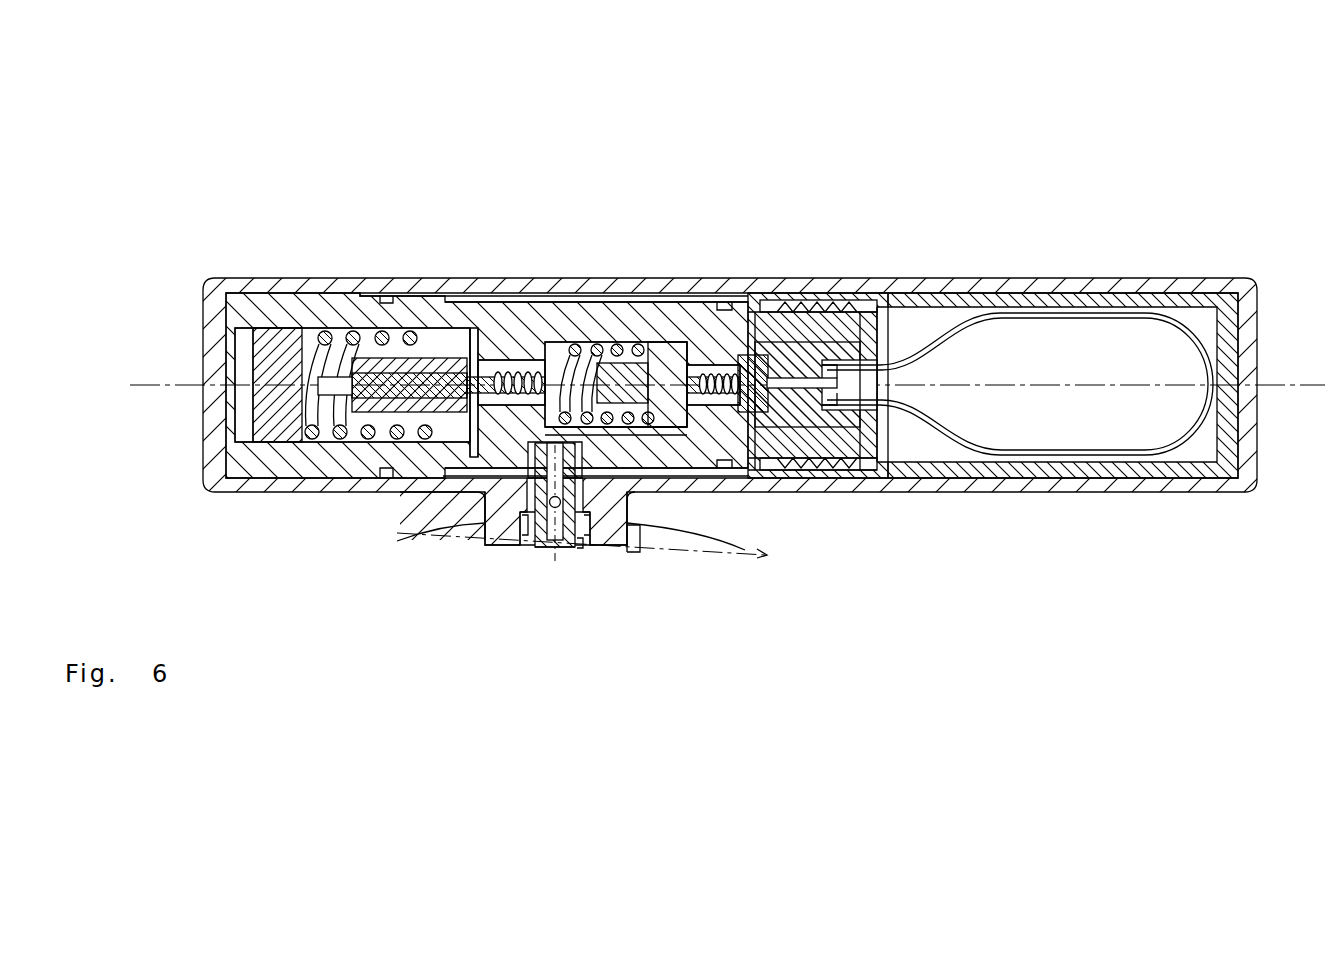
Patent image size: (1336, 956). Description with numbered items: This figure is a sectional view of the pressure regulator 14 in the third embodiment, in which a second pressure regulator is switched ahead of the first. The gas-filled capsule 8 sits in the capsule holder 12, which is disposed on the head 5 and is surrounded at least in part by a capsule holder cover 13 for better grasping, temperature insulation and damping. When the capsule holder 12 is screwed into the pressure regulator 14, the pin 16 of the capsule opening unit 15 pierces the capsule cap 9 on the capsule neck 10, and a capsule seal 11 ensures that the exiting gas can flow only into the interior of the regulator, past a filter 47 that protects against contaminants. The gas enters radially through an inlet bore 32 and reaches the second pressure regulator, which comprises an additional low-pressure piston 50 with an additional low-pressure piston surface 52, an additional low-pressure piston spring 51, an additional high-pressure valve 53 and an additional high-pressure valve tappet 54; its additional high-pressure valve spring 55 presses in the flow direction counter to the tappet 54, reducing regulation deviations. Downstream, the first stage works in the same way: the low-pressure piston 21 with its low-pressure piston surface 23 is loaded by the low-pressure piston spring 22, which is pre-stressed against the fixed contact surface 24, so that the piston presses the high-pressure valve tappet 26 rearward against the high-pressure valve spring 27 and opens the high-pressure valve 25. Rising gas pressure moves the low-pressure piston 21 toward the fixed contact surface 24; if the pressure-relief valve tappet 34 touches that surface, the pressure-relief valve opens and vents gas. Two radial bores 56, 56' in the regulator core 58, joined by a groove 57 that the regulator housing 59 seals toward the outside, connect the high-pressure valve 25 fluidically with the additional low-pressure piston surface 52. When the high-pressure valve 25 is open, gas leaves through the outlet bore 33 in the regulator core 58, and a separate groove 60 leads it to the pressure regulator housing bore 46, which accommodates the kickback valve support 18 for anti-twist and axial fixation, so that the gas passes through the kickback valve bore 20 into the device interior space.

The head 5 is at (512, 530).
The capsule 8 is at (1040, 430).
The capsule cap 9 is at (818, 440).
The capsule neck 10 is at (836, 406).
The capsule seal 11 is at (820, 355).
The capsule holder 12 is at (793, 483).
The capsule holder cover 13 is at (1250, 492).
The pressure regulator 14 is at (196, 170).
The capsule opening unit 15 is at (777, 350).
The pin 16 is at (872, 300).
The kickback valve support 18 is at (572, 540).
The kickback valve bore 20 is at (552, 530).
The low-pressure piston 21 is at (442, 345).
The low-pressure piston spring 22 is at (383, 340).
The low-pressure piston surface 23 is at (458, 355).
The fixed contact surface 24 is at (300, 432).
The high-pressure valve 25 is at (592, 352).
The high-pressure valve tappet 26 is at (528, 368).
The high-pressure valve spring 27 is at (538, 378).
The inlet bore 32 is at (795, 330).
The outlet bore 33 is at (478, 460).
The pressure-relief valve tappet 34 is at (345, 335).
The pressure regulator housing bore 46 is at (585, 548).
The filter 47 is at (743, 355).
The additional low-pressure piston 50 is at (676, 370).
The additional low-pressure piston spring 51 is at (614, 342).
The additional low-pressure piston surface 52 is at (686, 362).
The additional high-pressure valve 53 is at (728, 414).
The additional high-pressure valve tappet 54 is at (693, 428).
The additional high-pressure valve spring 55 is at (722, 405).
The radial bore 56 is at (527, 266).
The radial bore 56' is at (739, 227).
The groove 57 is at (590, 302).
The regulator core 58 is at (366, 302).
The regulator housing 59 is at (386, 290).
The groove 60 is at (481, 458).